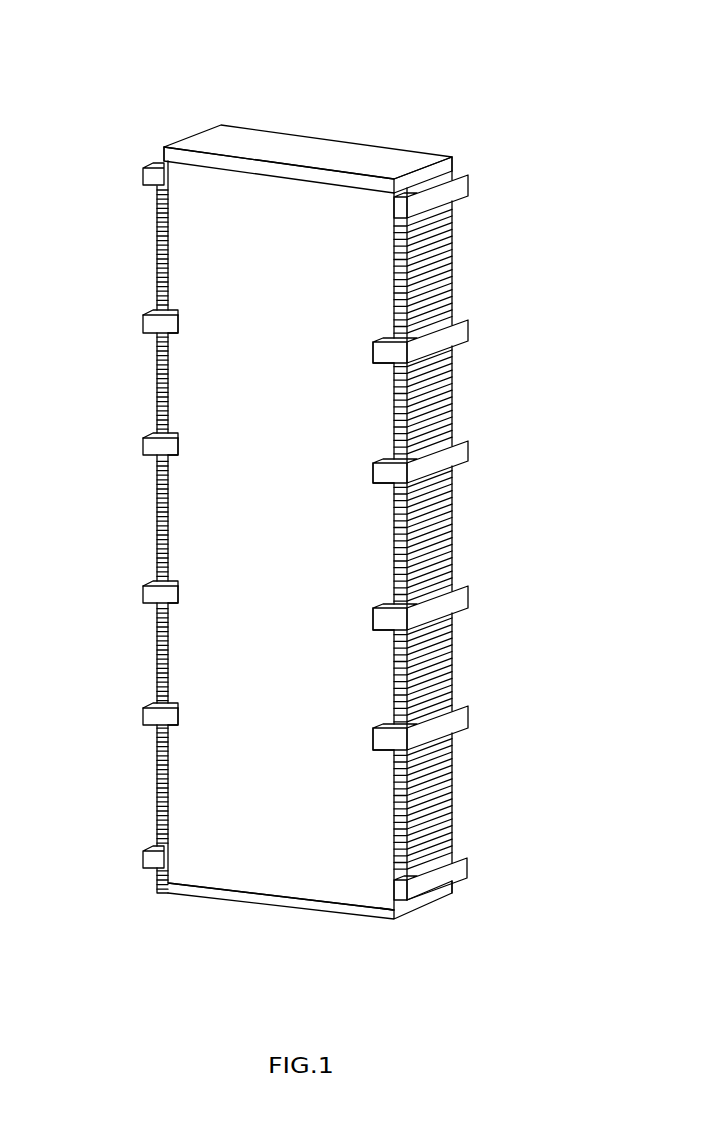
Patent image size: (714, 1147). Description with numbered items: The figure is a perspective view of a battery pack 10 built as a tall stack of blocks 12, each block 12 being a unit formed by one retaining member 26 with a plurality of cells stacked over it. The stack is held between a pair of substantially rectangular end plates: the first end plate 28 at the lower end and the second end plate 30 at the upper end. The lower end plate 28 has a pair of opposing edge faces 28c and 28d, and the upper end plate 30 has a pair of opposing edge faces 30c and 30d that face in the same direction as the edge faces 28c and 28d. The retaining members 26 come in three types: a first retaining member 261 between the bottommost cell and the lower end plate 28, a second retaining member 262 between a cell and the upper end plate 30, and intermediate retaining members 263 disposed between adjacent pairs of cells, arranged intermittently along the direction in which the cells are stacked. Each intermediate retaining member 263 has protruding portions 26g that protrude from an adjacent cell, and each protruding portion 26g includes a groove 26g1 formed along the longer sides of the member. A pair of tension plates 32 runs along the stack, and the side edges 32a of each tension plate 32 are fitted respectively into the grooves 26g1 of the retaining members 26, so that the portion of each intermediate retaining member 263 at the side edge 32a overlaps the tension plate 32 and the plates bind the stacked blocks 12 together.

The battery pack 10 is at (102, 73).
The block 12 is at (472, 266).
The retaining member 26 is at (481, 193).
The protruding portion 26g is at (137, 337).
The groove 26g1 is at (176, 307).
The first retaining member 261 is at (141, 852).
The second retaining member 262 is at (141, 175).
The intermediate retaining member 263 is at (141, 318).
The first end plate 28 is at (418, 907).
The edge face 28c is at (379, 919).
The edge face 28d is at (464, 896).
The second end plate 30 is at (362, 158).
The edge face 30c is at (154, 149).
The edge face 30d is at (460, 153).
The tension plate 32 is at (256, 888).
The side edge 32a is at (190, 512).